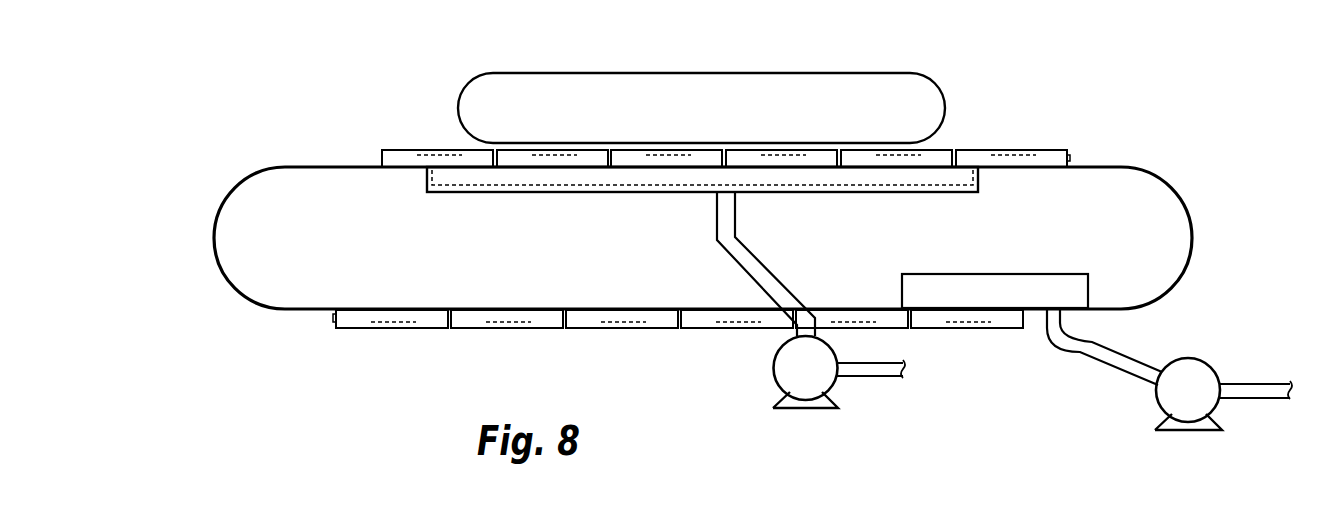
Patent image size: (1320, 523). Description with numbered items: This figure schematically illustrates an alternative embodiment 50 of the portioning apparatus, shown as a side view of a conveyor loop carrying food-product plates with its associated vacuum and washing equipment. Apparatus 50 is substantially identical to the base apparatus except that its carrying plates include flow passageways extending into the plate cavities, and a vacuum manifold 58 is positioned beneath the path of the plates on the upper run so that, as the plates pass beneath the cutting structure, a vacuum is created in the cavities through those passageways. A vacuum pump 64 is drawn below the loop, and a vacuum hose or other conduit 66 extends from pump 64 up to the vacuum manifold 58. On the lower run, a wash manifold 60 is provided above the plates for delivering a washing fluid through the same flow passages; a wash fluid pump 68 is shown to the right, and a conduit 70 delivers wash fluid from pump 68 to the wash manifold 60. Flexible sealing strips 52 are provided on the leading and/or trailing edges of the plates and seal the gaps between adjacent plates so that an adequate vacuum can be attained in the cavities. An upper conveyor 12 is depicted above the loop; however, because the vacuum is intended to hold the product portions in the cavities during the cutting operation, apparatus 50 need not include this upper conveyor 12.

The upper conveyor 12 is at (622, 73).
The alternative embodiment of the portioning apparatus 50 is at (1017, 130).
The flexible sealing strips 52 is at (1073, 158).
The vacuum manifold 58 is at (510, 187).
The wash manifold 60 is at (995, 283).
The vacuum pump 64 is at (793, 364).
The vacuum hose or conduit 66 is at (735, 257).
The wash fluid pump 68 is at (1195, 372).
The conduit 70 is at (1102, 363).